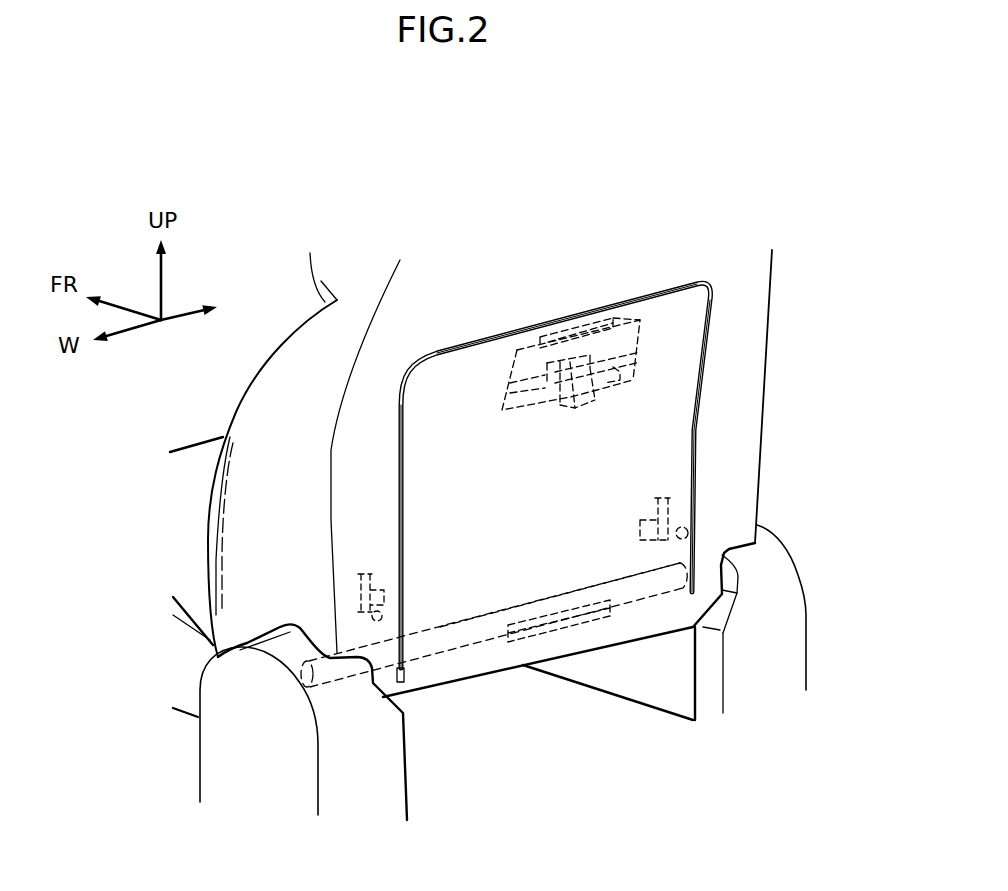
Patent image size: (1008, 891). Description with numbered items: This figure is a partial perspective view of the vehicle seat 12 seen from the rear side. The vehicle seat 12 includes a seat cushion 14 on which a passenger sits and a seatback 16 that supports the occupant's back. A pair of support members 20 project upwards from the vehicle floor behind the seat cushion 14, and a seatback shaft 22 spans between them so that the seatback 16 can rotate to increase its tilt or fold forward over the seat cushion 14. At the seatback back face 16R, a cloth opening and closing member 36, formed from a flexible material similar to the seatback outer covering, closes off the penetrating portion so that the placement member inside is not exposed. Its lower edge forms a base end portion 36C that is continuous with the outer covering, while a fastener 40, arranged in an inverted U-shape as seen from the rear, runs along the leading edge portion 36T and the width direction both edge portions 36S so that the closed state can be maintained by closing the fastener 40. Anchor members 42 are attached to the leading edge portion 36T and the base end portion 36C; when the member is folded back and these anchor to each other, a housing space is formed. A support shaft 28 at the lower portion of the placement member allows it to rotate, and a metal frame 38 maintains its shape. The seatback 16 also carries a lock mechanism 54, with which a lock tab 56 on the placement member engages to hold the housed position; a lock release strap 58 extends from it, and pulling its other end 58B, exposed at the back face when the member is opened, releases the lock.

The vehicle seat 12 is at (271, 212).
The seat cushion 14 is at (185, 442).
The seatback 16 is at (290, 330).
The seatback back face 16R is at (742, 262).
The support members 20 is at (200, 782).
The seatback shaft 22 is at (468, 647).
The support shaft 28 is at (357, 605).
The opening and closing member 36 is at (668, 392).
The leading edge portion 36T is at (492, 338).
The width direction both edge portions 36S is at (400, 470).
The base end portion 36C is at (627, 608).
The metal frame 38 is at (357, 580).
The fastener 40 is at (402, 558).
The anchor members 42 is at (602, 312).
The lock mechanism 54 is at (650, 338).
The lock tab 56 is at (500, 392).
The lock release strap 58 is at (545, 402).
The other end of lock release strap 58B is at (583, 413).